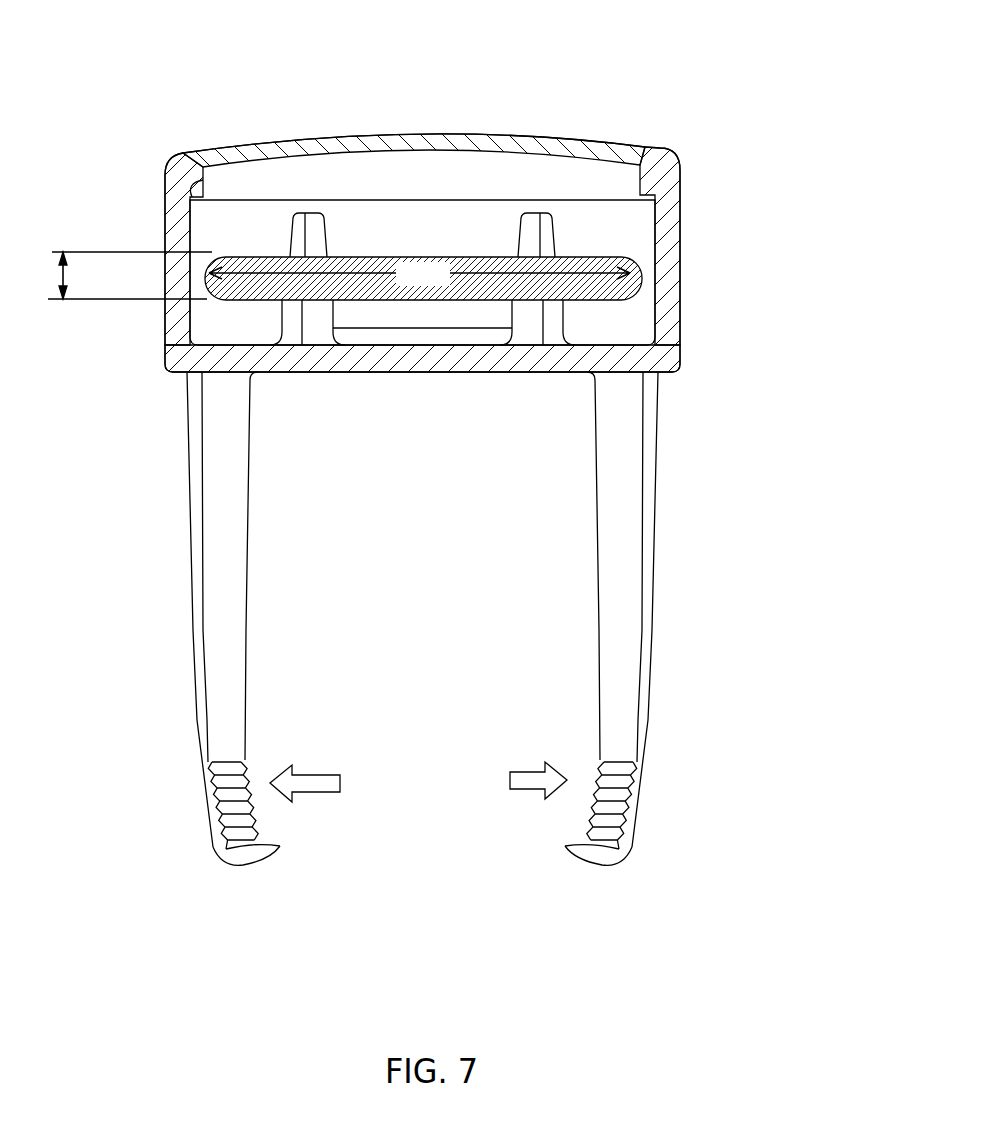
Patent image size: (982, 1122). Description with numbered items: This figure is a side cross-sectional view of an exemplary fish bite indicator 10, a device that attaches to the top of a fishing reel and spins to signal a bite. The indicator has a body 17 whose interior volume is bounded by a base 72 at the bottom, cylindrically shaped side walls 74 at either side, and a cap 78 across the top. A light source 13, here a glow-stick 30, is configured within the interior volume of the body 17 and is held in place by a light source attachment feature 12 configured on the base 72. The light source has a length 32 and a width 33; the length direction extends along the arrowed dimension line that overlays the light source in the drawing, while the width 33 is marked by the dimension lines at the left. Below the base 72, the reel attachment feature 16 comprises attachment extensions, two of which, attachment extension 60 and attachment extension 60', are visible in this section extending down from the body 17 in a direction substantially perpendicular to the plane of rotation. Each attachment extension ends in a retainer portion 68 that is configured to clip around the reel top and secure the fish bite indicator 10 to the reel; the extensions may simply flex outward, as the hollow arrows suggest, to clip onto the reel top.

The fish bite indicator 10 is at (220, 134).
The light source attachment feature 12 is at (292, 314).
The light source 13 is at (458, 257).
The reel attachment feature 16 is at (232, 530).
The body 17 is at (680, 205).
The glow-stick 30 is at (361, 257).
The length 32 is at (419, 274).
The width 33 is at (60, 250).
The attachment extension 60 is at (185, 618).
The attachment extension 60' is at (686, 609).
The retainer portion 68 is at (620, 858).
The base 72 is at (364, 376).
The side walls 74 is at (668, 278).
The cap 78 is at (590, 150).